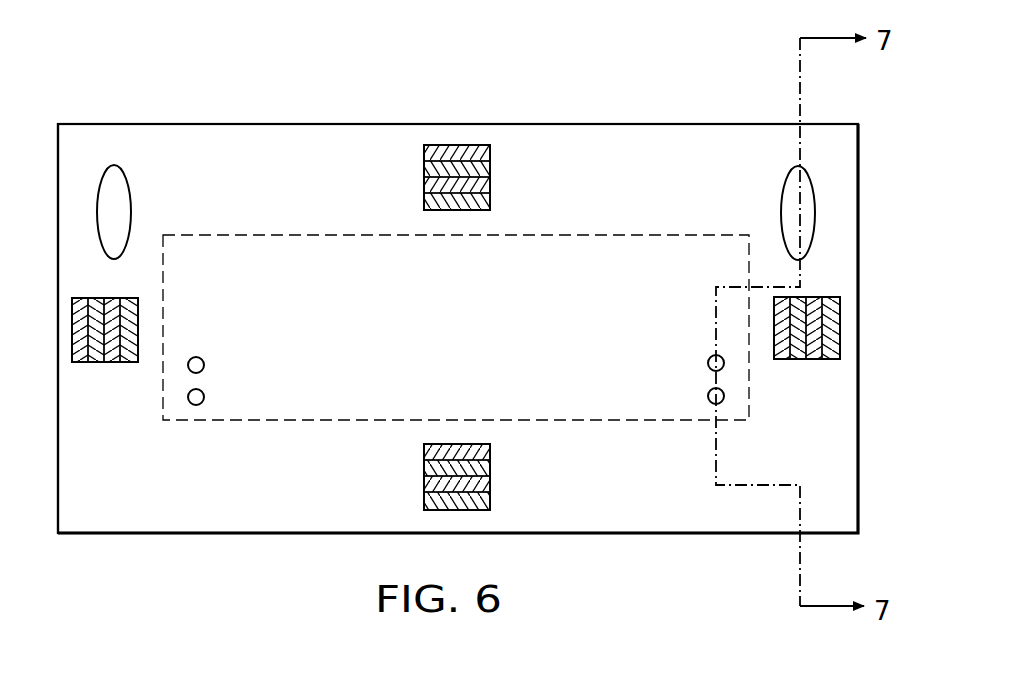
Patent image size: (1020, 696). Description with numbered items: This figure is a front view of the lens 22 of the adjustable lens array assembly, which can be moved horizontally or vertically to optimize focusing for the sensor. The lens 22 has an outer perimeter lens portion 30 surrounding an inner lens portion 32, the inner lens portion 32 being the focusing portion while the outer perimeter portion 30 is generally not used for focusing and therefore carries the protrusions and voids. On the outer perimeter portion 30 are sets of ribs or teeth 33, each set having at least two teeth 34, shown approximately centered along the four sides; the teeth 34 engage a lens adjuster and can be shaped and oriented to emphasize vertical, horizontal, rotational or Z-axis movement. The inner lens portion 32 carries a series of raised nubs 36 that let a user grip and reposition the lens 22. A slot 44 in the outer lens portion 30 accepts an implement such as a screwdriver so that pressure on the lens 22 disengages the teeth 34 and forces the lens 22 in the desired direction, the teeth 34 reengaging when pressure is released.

The lens 22 is at (384, 84).
The outer perimeter lens portion 30 is at (225, 123).
The inner lens portion 32 is at (620, 233).
The set of ribs or teeth 33 is at (462, 140).
The teeth 34 is at (492, 155).
The raised nubs 36 is at (198, 405).
The slot 44 is at (122, 183).